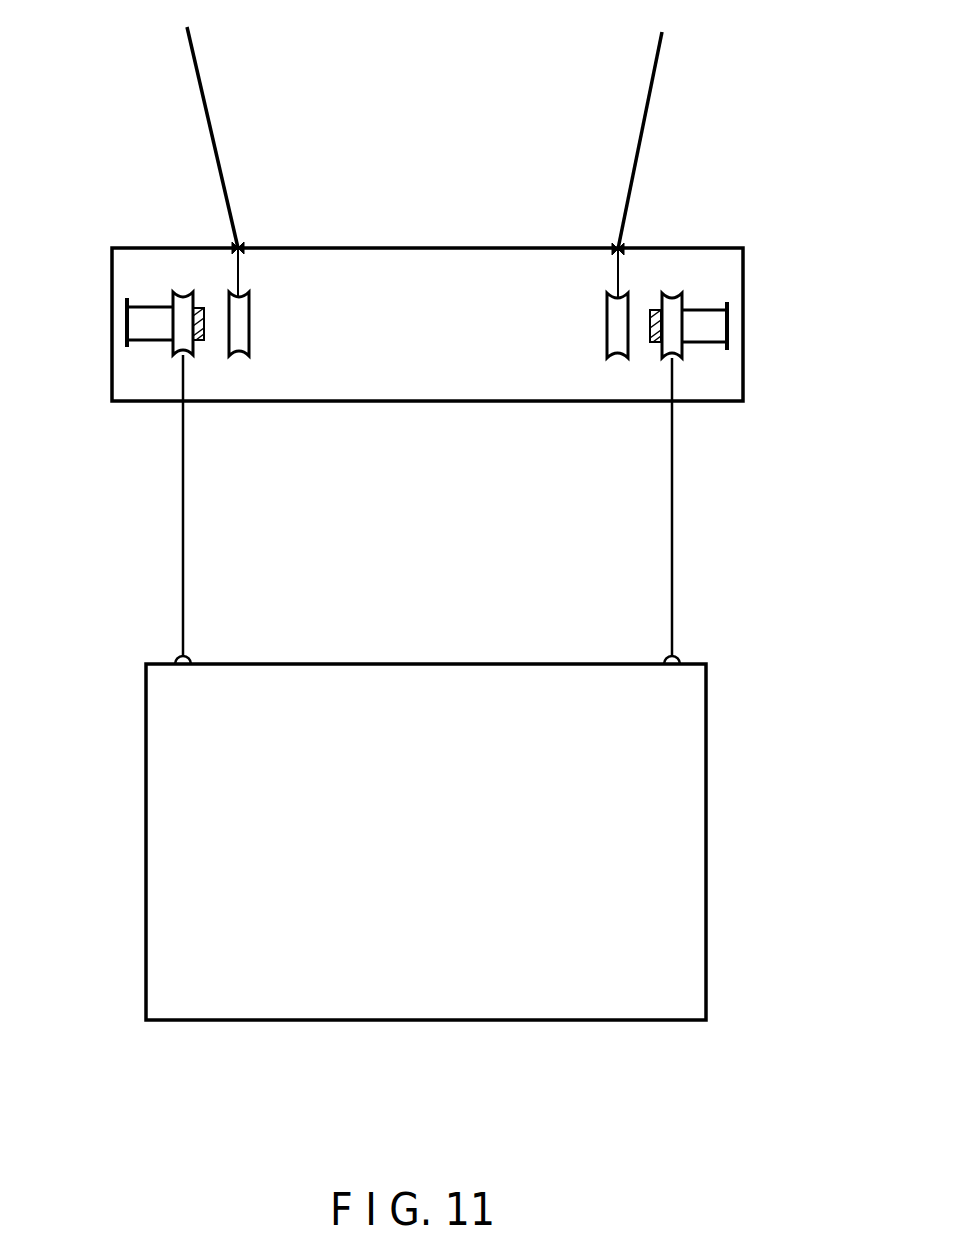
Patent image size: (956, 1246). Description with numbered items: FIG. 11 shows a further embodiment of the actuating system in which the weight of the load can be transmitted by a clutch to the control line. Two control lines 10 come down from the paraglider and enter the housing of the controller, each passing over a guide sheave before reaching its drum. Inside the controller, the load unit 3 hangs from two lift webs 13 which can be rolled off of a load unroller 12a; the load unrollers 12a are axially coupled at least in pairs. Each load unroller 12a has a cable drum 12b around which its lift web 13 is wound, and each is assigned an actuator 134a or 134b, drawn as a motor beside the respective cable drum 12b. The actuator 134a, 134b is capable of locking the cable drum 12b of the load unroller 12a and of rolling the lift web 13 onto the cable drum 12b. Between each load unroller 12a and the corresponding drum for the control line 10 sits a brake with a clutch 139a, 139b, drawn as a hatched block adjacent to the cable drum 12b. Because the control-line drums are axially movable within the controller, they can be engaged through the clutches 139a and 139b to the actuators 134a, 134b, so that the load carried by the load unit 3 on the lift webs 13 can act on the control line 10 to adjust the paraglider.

The load unit 3 is at (694, 820).
The control line 10 is at (198, 68).
The load unroller 12a is at (152, 276).
The cable drum 12b is at (188, 296).
The lift web 13 is at (183, 552).
The actuator 134a is at (153, 343).
The actuator 134b is at (712, 308).
The brake with a clutch 139a is at (198, 342).
The brake with a clutch 139b is at (657, 342).